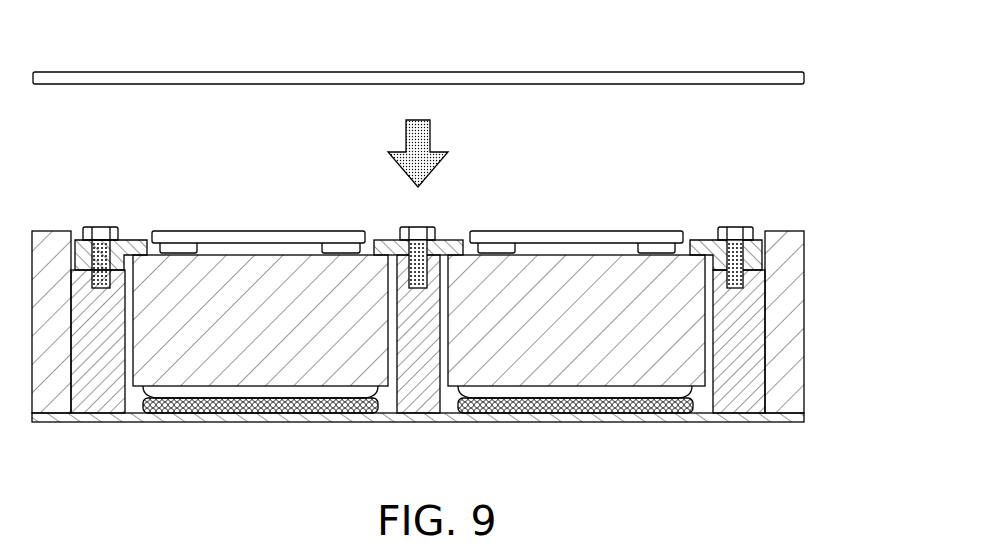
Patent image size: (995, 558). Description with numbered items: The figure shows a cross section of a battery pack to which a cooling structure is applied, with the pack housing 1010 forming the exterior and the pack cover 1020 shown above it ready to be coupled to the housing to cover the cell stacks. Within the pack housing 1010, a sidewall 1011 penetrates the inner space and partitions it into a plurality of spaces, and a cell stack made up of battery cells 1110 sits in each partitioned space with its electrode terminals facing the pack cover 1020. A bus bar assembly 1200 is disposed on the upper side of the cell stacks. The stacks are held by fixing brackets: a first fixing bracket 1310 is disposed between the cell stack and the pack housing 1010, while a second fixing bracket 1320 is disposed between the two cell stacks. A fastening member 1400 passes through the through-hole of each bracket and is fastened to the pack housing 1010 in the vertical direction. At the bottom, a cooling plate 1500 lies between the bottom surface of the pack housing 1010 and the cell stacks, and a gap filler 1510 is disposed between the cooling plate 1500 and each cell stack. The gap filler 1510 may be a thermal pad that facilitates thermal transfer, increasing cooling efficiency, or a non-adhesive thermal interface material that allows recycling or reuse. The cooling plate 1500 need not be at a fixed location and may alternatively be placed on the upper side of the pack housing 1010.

The pack cover 1020 is at (757, 78).
The pack housing 1010 is at (792, 340).
The sidewall 1011 is at (97, 400).
The cooling plate 1500 is at (798, 417).
The first fixing bracket 1310 is at (760, 252).
The second fixing bracket 1320 is at (455, 239).
The fastening member 1400 is at (735, 222).
The battery cell 1110 is at (204, 384).
The gap filler 1510 is at (310, 394).
The bus bar assembly 1200 is at (201, 230).